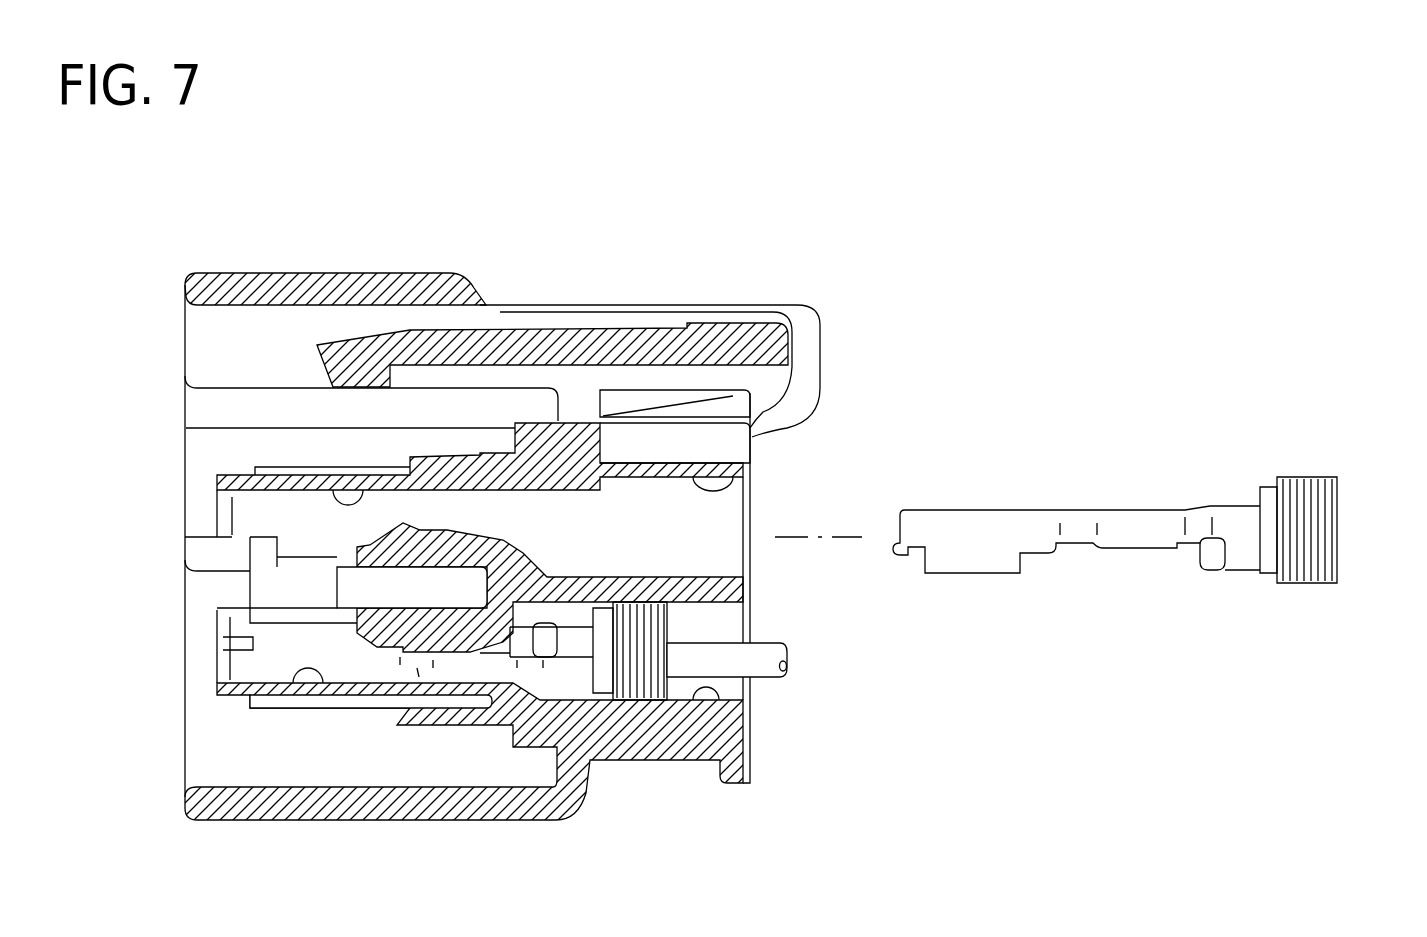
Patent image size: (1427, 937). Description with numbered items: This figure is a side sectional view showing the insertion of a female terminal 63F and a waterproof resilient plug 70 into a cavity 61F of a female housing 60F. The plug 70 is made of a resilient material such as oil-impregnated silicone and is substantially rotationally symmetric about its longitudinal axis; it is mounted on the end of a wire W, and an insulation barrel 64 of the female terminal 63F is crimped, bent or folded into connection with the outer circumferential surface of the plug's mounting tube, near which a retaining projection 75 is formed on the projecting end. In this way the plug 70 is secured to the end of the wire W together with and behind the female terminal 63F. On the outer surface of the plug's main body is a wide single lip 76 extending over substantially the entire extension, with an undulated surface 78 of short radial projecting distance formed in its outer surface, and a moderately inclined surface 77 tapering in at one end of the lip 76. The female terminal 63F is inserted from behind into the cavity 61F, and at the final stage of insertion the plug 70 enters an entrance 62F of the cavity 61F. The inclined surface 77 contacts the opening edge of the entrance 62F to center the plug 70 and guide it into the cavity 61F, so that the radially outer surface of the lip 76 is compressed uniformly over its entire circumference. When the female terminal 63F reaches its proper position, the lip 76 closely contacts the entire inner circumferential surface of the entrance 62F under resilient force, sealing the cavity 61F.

The female housing 60F is at (549, 251).
The cavity 61F is at (334, 490).
The entrance 62F is at (735, 492).
The female terminal 63F is at (990, 523).
The waterproof resilient plug 70 is at (624, 703).
The retaining projection 75 is at (1208, 568).
The insulation barrel 64 is at (1238, 555).
The wide single lip 76 is at (655, 602).
The inclined surface 77 is at (1272, 487).
The undulated surface 78 is at (1297, 583).
The wire W is at (757, 657).